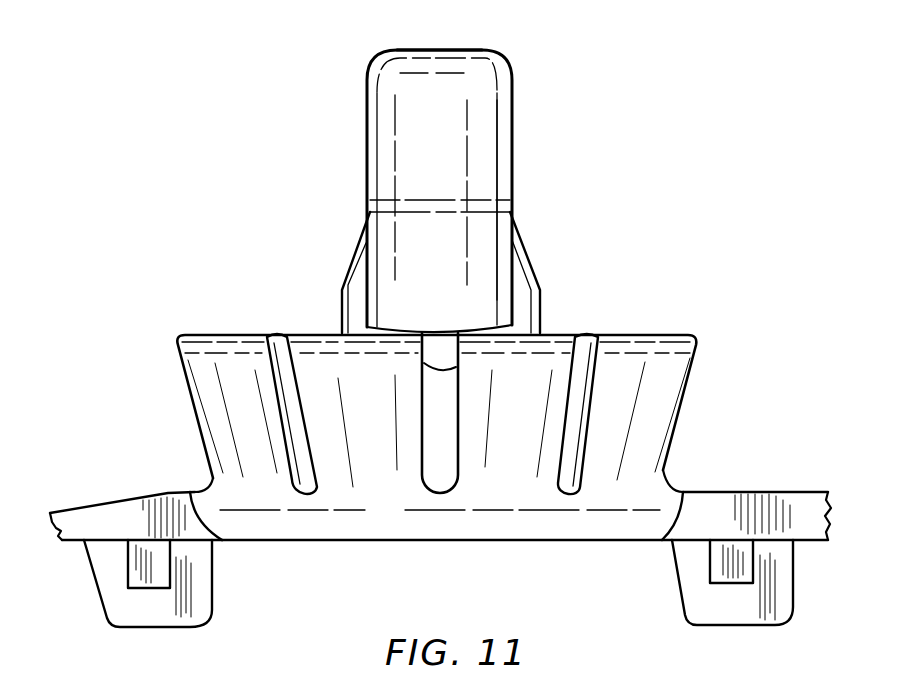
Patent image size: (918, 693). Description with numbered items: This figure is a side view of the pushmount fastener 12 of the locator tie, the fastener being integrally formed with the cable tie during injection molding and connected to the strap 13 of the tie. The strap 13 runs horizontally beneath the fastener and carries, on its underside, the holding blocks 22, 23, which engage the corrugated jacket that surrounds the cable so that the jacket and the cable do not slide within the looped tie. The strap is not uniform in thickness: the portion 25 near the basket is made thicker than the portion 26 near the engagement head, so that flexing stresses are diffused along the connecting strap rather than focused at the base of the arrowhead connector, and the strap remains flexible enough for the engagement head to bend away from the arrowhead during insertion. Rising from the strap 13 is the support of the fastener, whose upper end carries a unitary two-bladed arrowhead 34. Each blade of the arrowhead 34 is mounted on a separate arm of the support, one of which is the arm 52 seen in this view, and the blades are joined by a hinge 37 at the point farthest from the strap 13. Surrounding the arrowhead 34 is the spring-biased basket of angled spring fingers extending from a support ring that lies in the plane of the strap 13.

The pushmount fastener 12 is at (390, 158).
The strap 13 is at (718, 505).
The holding block 22 is at (195, 592).
The holding block 23 is at (698, 600).
The strap portion near the basket 25 is at (177, 518).
The strap portion near the engagement head 26 is at (77, 527).
The two-bladed arrowhead 34 is at (488, 152).
The hinge 37 is at (447, 50).
The arm of the support 52 is at (360, 287).